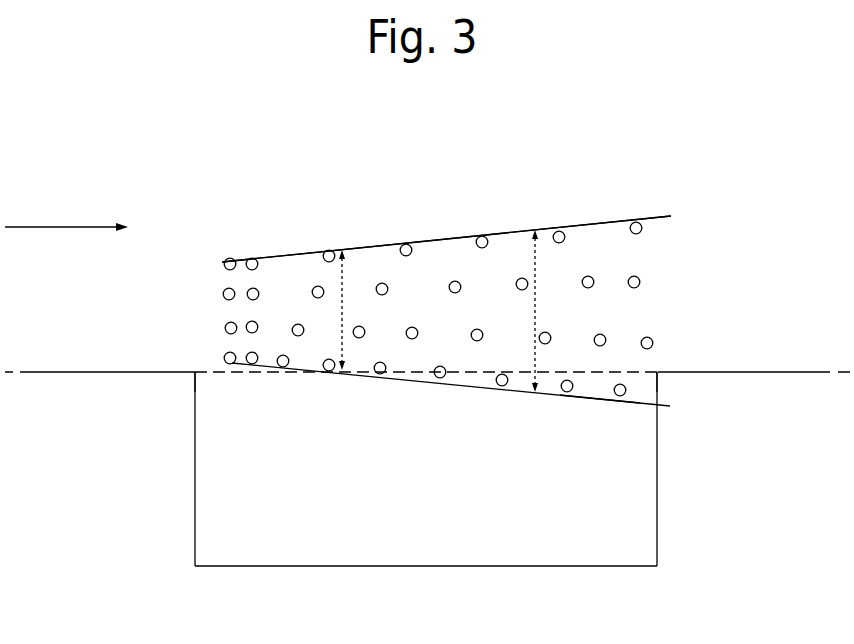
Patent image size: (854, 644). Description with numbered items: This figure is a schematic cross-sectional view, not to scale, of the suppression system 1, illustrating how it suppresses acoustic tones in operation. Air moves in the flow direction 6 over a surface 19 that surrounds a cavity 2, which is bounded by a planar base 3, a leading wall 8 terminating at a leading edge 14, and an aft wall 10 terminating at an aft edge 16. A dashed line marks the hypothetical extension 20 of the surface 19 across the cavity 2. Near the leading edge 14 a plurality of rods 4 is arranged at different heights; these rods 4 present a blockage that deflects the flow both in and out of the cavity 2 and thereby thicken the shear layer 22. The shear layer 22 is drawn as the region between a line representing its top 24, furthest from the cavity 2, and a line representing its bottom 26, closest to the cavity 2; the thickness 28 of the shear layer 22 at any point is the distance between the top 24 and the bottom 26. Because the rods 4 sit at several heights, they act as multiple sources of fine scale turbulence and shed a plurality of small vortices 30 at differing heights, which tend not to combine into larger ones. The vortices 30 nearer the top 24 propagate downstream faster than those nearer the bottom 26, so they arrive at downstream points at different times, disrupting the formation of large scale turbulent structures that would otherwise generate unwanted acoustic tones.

The suppression system 1 is at (457, 297).
The cavity 2 is at (421, 466).
The planar base 3 is at (440, 566).
The plurality of rods 4 is at (224, 262).
The flow direction 6 is at (45, 226).
The leading wall 8 is at (195, 490).
The aft (trailing) wall 10 is at (657, 478).
The leading edge 14 is at (194, 370).
The aft (trailing) edge 16 is at (658, 372).
The surface 19 is at (62, 371).
The hypothetical extension of the surface 20 is at (608, 368).
The shear layer 22 is at (288, 277).
The top of the shear layer 24 is at (378, 242).
The bottom of the shear layer 26 is at (455, 390).
The thickness of the shear layer 28 is at (347, 282).
The vortices 30 is at (456, 315).